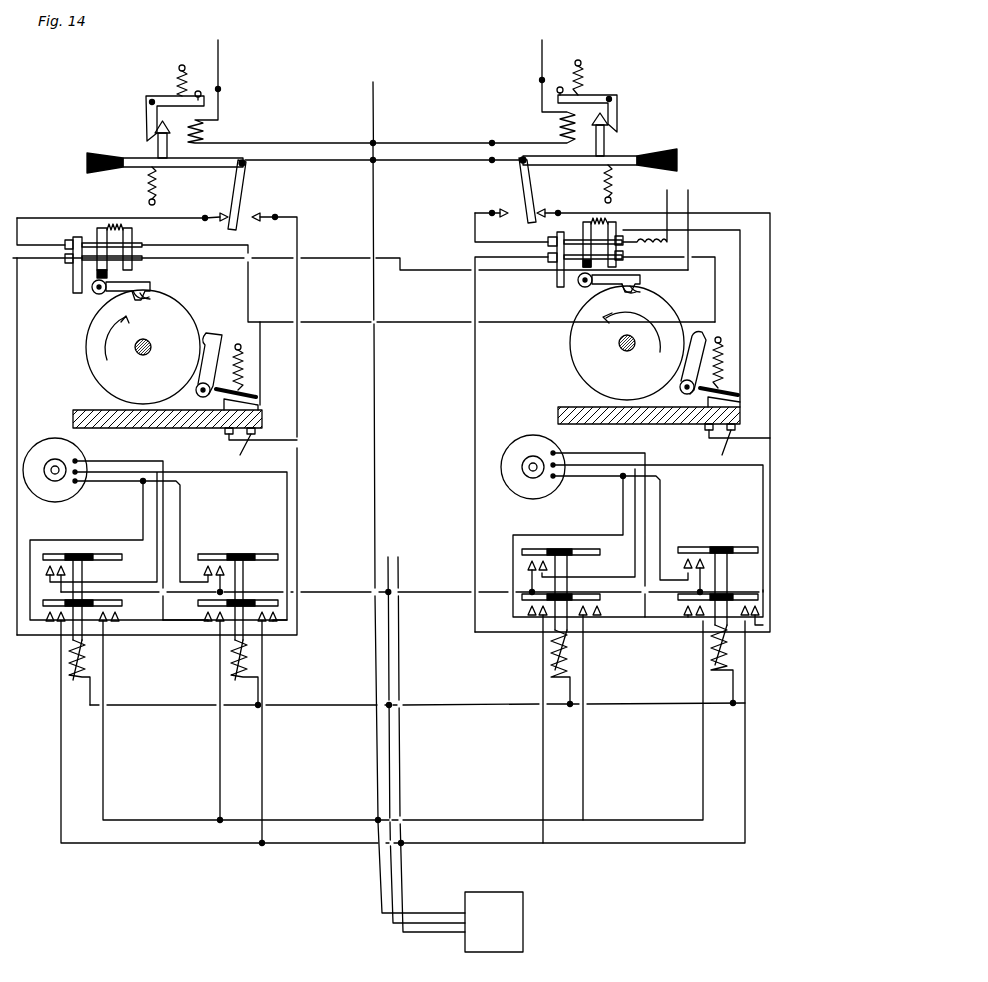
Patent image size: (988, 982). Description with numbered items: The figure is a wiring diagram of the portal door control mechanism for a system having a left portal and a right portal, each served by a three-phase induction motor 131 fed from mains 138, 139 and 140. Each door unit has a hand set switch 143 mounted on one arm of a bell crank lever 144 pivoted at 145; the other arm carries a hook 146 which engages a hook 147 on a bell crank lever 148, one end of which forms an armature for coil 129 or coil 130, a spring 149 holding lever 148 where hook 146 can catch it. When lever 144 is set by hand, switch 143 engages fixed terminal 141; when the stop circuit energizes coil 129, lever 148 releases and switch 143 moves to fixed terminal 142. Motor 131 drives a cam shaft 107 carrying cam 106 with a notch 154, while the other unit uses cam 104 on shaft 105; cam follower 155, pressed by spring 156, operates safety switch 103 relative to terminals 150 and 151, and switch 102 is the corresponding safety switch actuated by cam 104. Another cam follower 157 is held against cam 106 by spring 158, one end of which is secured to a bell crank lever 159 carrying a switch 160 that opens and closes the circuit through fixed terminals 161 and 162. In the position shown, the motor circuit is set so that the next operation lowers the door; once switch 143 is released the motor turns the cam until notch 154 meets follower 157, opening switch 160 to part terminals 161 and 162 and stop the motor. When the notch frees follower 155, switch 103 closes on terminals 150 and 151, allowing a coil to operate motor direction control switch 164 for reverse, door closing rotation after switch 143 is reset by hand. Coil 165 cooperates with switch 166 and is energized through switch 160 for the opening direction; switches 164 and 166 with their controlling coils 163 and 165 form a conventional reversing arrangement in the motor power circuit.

The automatic switch 102 is at (585, 222).
The automatic switch 103 is at (100, 228).
The cam 104 is at (577, 352).
The shaft 105 is at (622, 352).
The cam 106 is at (92, 325).
The shaft 107 is at (146, 355).
The coil 129 is at (199, 130).
The coil 130 is at (562, 124).
The motor 131 is at (65, 487).
The main 138 is at (340, 787).
The main 139 is at (340, 592).
The main 140 is at (218, 843).
The fixed terminal 141 is at (222, 212).
The fixed terminal 142 is at (258, 212).
The switch 143 is at (240, 185).
The bell crank lever 144 is at (137, 157).
The pivot 145 is at (245, 160).
The hook 146 is at (169, 137).
The hook 147 is at (147, 110).
The bell crank lever 148 is at (166, 96).
The spring 149 is at (188, 82).
The terminal 150 is at (71, 240).
The terminal 151 is at (73, 272).
The notch 154 is at (152, 300).
The cam follower 155 is at (150, 295).
The spring 156 is at (115, 226).
The cam follower 157 is at (198, 342).
The spring 158 is at (240, 360).
The bell crank lever 159 is at (215, 420).
The switch 160 is at (245, 394).
The fixed terminal 161 is at (237, 450).
The fixed terminal 162 is at (246, 405).
The controlling coil 163 is at (70, 672).
The motor direction control switch 164 is at (95, 572).
The coil 165 is at (255, 665).
The switch 166 is at (243, 570).